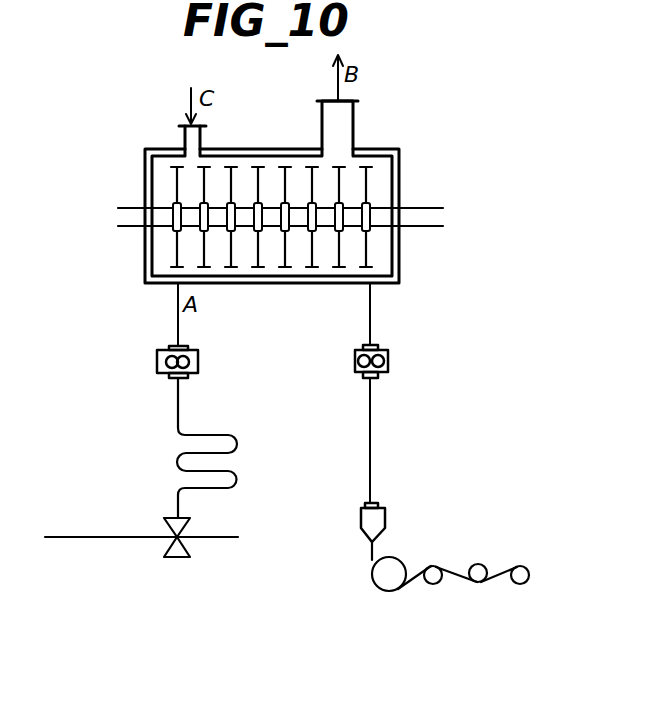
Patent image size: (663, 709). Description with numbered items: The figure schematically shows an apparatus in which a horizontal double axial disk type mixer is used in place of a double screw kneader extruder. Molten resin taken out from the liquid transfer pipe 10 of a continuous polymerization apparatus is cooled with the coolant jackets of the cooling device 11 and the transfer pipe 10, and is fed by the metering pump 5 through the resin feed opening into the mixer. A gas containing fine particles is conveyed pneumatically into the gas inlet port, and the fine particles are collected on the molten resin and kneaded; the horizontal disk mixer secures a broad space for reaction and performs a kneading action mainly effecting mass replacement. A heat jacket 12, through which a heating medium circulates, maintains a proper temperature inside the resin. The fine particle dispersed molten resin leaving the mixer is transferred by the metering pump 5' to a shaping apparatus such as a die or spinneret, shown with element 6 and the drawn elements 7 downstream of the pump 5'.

The heat jacket 12 is at (400, 196).
The agitating blade / roller 7 is at (286, 242).
The metering pump 5 is at (147, 362).
The metering pump 5' is at (391, 361).
The cooling device 11 is at (212, 435).
The liquid transfer pipe 10 is at (96, 537).
The spinning nozzle 6 is at (386, 516).